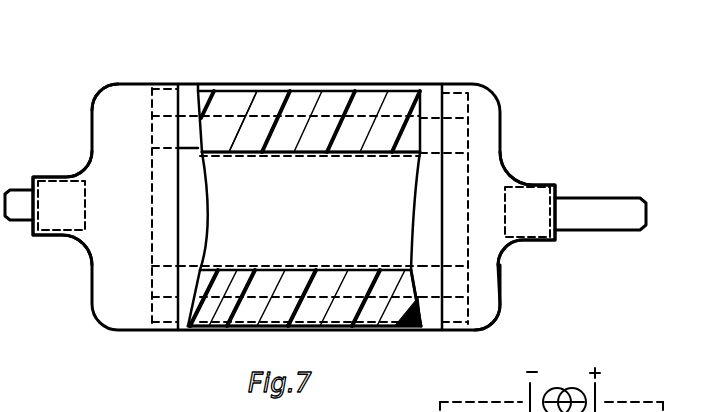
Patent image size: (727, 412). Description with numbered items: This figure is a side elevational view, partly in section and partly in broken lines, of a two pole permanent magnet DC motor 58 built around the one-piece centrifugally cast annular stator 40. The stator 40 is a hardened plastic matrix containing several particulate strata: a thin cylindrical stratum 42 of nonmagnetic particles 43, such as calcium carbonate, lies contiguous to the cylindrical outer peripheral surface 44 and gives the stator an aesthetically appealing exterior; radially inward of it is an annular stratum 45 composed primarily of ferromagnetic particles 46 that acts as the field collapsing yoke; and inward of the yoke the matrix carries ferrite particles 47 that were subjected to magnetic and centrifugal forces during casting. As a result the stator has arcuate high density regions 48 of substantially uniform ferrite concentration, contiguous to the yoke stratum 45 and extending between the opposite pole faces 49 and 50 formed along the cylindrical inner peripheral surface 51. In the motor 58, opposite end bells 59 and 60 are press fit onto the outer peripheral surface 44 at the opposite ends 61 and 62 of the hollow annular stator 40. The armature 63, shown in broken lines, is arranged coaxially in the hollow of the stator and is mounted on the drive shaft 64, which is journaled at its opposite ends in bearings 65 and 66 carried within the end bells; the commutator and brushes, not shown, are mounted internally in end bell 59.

The stator 40 is at (341, 91).
The cylindrical stratum 42 is at (250, 327).
The particles of nonmagnetic material 43 is at (413, 91).
The cylindrical outer peripheral surface 44 is at (250, 90).
The annular stratum 45 is at (395, 330).
The ferromagnetic particles 46 is at (200, 90).
The ferrite particles 47 is at (277, 142).
The high density regions 48 is at (360, 268).
The pole face 49 is at (323, 142).
The pole face 50 is at (295, 268).
The cylindrical inner peripheral surface 51 is at (337, 268).
The two pole DC motor 58 is at (499, 103).
The end bell 59 is at (95, 108).
The end bell 60 is at (500, 295).
The end of annular member 61 is at (152, 143).
The end of annular member 62 is at (468, 132).
The terminal 63 is at (420, 153).
The drive shaft 64 is at (629, 198).
The bearing 65 is at (76, 178).
The bearing 66 is at (516, 181).